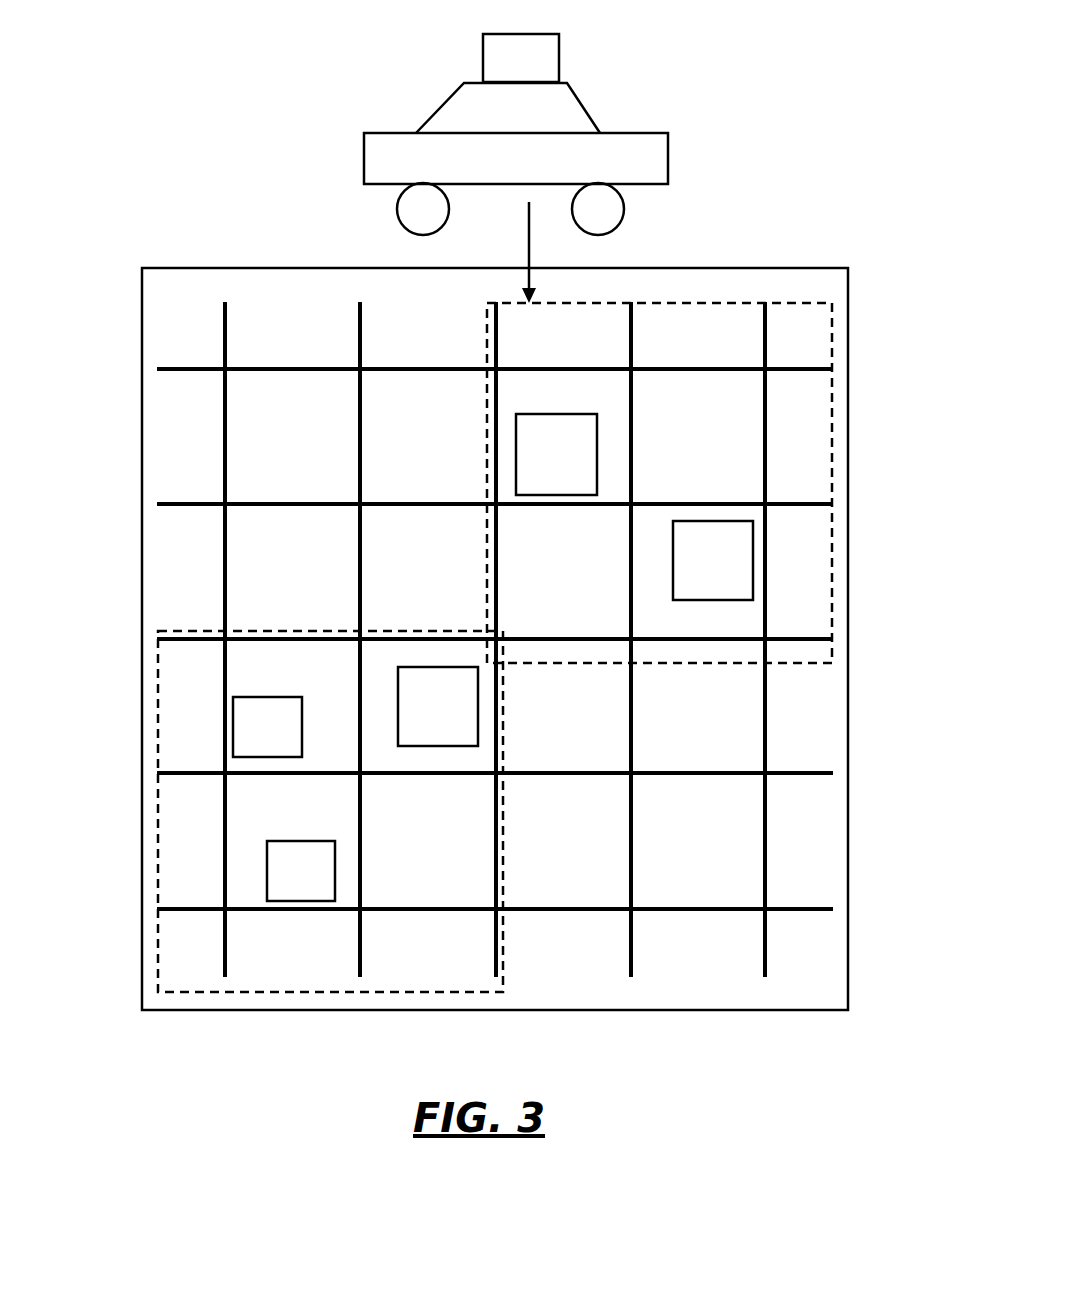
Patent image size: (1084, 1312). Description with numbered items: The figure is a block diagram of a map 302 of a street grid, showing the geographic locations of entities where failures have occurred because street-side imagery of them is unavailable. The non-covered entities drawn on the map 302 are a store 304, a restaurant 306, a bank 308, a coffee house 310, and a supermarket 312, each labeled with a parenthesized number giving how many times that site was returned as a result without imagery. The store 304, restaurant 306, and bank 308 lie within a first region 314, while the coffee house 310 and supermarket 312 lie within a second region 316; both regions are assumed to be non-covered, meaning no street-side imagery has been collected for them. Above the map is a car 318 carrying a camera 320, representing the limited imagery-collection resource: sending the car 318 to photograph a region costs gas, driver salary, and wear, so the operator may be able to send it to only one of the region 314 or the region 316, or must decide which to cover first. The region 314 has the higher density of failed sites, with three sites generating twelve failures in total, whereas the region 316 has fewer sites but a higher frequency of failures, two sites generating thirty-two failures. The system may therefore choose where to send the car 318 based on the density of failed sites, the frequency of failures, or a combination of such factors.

The map 302 is at (255, 250).
The store 304 is at (260, 697).
The restaurant 306 is at (478, 708).
The bank 308 is at (335, 862).
The coffee house 310 is at (516, 433).
The supermarket 312 is at (673, 563).
The region 314 is at (158, 717).
The region 316 is at (658, 303).
The car 318 is at (578, 100).
The camera 320 is at (521, 58).